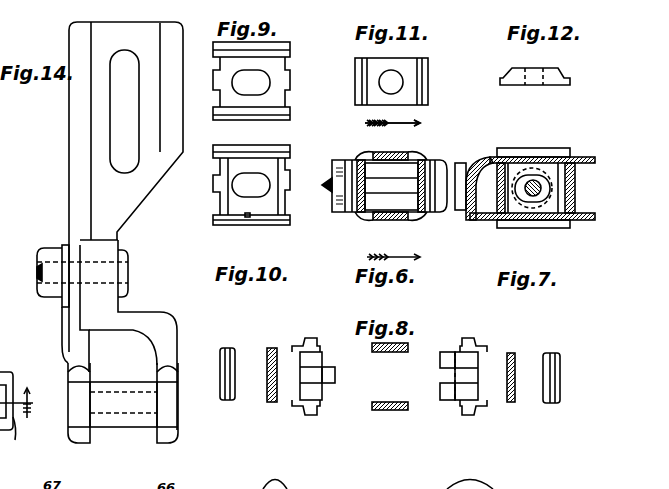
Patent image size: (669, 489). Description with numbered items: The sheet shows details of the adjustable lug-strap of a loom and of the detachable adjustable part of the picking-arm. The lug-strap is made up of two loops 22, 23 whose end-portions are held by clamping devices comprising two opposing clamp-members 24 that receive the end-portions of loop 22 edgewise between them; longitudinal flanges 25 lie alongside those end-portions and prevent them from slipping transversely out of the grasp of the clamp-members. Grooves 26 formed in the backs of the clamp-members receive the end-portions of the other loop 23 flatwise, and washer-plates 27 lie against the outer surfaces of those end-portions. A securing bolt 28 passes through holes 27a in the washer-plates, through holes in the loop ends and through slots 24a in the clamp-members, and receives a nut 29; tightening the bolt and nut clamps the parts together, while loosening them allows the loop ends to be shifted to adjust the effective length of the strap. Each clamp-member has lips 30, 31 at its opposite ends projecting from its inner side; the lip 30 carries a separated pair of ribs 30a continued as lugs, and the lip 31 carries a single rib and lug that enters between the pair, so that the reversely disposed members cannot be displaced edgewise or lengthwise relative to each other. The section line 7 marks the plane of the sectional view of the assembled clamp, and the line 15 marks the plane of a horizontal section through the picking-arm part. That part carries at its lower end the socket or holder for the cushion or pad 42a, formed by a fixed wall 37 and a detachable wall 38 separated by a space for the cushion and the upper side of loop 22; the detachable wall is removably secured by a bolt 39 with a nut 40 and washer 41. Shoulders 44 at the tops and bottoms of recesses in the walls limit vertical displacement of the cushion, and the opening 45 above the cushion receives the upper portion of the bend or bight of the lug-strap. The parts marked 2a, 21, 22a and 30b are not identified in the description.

In FIG. 14, the lever fragment 2a is at (8, 440).
In FIG. 11, the section line 7 is at (392, 117).
In FIG. 6, the section line 7 is at (392, 184).
In FIG. 14, the section line 15 is at (31, 403).
In FIG. 14, the arm 21 is at (69, 167).
In FIG. 6, the loop 22 is at (389, 152).
In FIG. 7, the loop 22 is at (585, 157).
In FIG. 8, the loop 22 is at (392, 353).
In FIG. 7, the plate edge 22a is at (494, 189).
In FIG. 6, the loop 23 is at (424, 166).
In FIG. 7, the loop 23 is at (470, 160).
In FIG. 8, the loop 23 is at (268, 350).
In FIG. 9, the clamp-member 24 is at (290, 42).
In FIG. 10, the clamp-member 24 is at (247, 218).
In FIG. 6, the clamp-member 24 is at (360, 158).
In FIG. 7, the clamp-member 24 is at (565, 148).
In FIG. 8, the clamp-member 24 is at (298, 407).
In FIG. 9, the slot 24a is at (268, 92).
In FIG. 10, the slot 24a is at (241, 172).
In FIG. 7, the slot 24a is at (535, 180).
In FIG. 10, the longitudinal flange 25 is at (255, 147).
In FIG. 6, the longitudinal flange 25 is at (369, 154).
In FIG. 8, the longitudinal flange 25 is at (311, 337).
In FIG. 8, the groove 26 is at (298, 388).
In FIG. 11, the washer-plate 27 is at (428, 78).
In FIG. 12, the washer-plate 27 is at (553, 67).
In FIG. 6, the washer-plate 27 is at (433, 212).
In FIG. 8, the washer-plate 27 is at (227, 347).
In FIG. 11, the hole 27a is at (379, 81).
In FIG. 12, the hole 27a is at (530, 68).
In FIG. 6, the securing bolt 28 is at (335, 184).
In FIG. 7, the securing bolt 28 is at (538, 175).
In FIG. 6, the nut 29 is at (343, 200).
In FIG. 10, the lip 30 is at (277, 167).
In FIG. 8, the lip 30 is at (453, 378).
In FIG. 9, the rib 30a is at (212, 63).
In FIG. 10, the rib 30a is at (285, 170).
In FIG. 6, the rib 30a is at (391, 187).
In FIG. 7, the rib 30a is at (507, 162).
In FIG. 8, the rib 30a is at (442, 352).
In FIG. 9, the tab 30b is at (291, 76).
In FIG. 10, the tab 30b is at (213, 180).
In FIG. 6, the tab 30b is at (380, 186).
In FIG. 7, the tab 30b is at (494, 194).
In FIG. 8, the tab 30b is at (335, 374).
In FIG. 10, the lip 31 is at (219, 201).
In FIG. 8, the lip 31 is at (323, 358).
In FIG. 14, the fixed wall 37 is at (167, 343).
In FIG. 14, the detachable wall 38 is at (62, 342).
In FIG. 14, the bolt 39 is at (128, 275).
In FIG. 14, the nut 40 is at (44, 298).
In FIG. 14, the washer 41 is at (62, 248).
In FIG. 14, the cushion or pad 42a is at (122, 428).
In FIG. 14, the shoulder 44 is at (70, 372).
In FIG. 14, the opening 45 is at (123, 347).